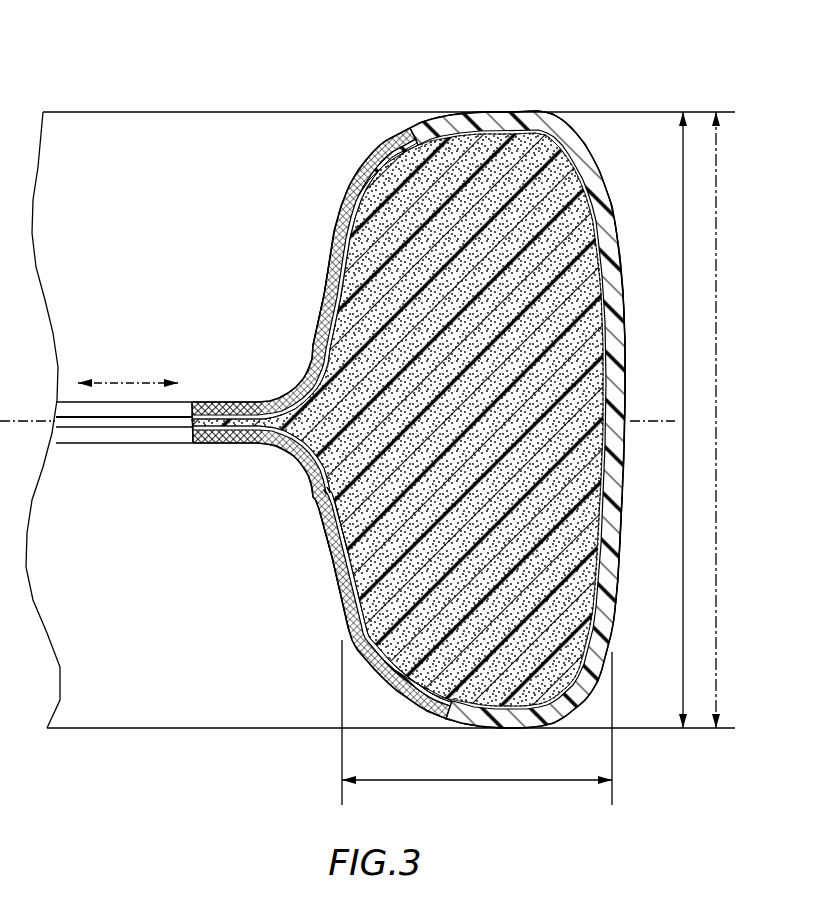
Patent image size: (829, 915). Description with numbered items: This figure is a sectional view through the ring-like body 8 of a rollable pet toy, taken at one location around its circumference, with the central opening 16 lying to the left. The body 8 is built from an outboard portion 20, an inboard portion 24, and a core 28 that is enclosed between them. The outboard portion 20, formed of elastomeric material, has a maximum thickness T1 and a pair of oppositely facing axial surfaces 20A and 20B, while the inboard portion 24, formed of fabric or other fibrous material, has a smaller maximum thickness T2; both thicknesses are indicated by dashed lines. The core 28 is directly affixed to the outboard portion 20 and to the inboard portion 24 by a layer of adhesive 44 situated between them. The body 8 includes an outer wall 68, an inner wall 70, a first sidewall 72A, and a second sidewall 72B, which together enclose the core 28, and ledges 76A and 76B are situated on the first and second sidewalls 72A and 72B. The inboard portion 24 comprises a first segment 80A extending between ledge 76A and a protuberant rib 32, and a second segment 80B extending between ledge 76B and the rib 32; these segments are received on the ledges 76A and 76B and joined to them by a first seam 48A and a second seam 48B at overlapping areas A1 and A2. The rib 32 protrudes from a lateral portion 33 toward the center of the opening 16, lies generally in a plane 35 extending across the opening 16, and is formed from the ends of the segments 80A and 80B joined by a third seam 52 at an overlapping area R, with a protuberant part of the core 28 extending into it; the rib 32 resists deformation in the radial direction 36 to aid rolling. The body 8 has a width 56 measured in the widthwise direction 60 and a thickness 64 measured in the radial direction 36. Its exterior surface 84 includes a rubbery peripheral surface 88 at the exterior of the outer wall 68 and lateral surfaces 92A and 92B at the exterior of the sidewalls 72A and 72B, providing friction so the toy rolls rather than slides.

The body 8 is at (532, 105).
The central opening 16 is at (128, 433).
The outboard portion 20 is at (592, 140).
The axial surface 20A is at (515, 112).
The axial surface 20B is at (493, 730).
The inboard portion 24 is at (329, 235).
The core 28 is at (578, 218).
The protuberant rib 32 is at (227, 448).
The lateral portion 33 is at (320, 530).
The plane 35 is at (652, 414).
The radial direction 36 is at (122, 380).
The layer of adhesive 44 is at (546, 142).
The first seam 48A is at (385, 147).
The second seam 48B is at (380, 676).
The third seam 52 is at (213, 400).
The width 56 is at (681, 460).
The widthwise direction 60 is at (715, 243).
The thickness 64 is at (495, 780).
The outer wall 68 is at (617, 288).
The inner wall 70 is at (313, 492).
The first sidewall 72A is at (488, 110).
The second sidewall 72B is at (485, 732).
The ledge 76A is at (360, 180).
The ledge 76B is at (407, 708).
The first segment 80A is at (327, 272).
The second segment 80B is at (323, 572).
The exterior surface 84 is at (632, 318).
The peripheral surface 88 is at (623, 538).
The lateral surface 92A is at (497, 112).
The lateral surface 92B is at (502, 732).
The overlapping area A1 is at (399, 150).
The overlapping area A2 is at (372, 642).
The overlapping area R is at (192, 422).
The maximum thickness T1 is at (533, 712).
The maximum thickness T2 is at (262, 417).